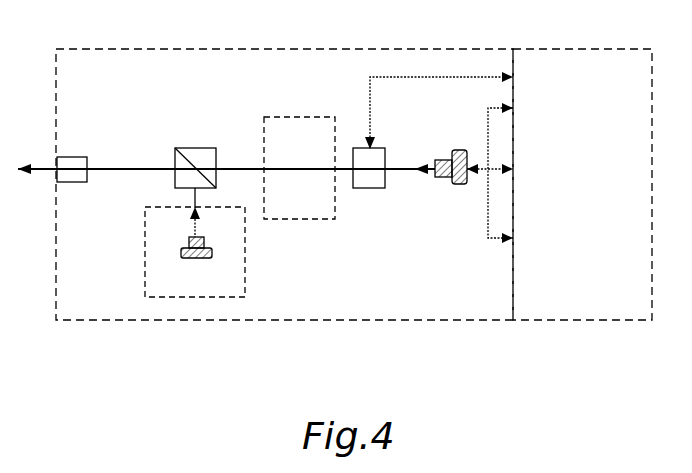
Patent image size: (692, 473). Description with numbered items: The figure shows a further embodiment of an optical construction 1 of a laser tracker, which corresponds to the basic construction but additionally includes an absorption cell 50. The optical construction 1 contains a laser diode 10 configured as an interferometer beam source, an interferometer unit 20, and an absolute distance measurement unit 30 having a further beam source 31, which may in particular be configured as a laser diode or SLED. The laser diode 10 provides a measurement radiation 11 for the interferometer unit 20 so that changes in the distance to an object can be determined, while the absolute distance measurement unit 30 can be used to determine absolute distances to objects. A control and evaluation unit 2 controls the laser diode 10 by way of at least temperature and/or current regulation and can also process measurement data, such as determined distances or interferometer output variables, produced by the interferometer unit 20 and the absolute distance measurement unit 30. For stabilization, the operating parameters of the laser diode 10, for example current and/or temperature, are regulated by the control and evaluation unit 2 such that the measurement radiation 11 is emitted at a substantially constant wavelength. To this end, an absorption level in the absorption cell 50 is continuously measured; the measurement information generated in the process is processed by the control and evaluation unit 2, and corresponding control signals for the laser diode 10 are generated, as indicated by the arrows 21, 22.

The optical construction 1 is at (94, 91).
The control and evaluation unit 2 is at (549, 92).
The laser diode 10 is at (458, 185).
The measurement radiation 11 is at (409, 177).
The interferometer unit 20 is at (303, 94).
The control signal arrow 21 is at (489, 239).
The control signal arrow 22 is at (447, 78).
The absolute distance measurement unit 30 is at (158, 262).
The further beam source 31 is at (210, 260).
The absorption cell 50 is at (377, 157).